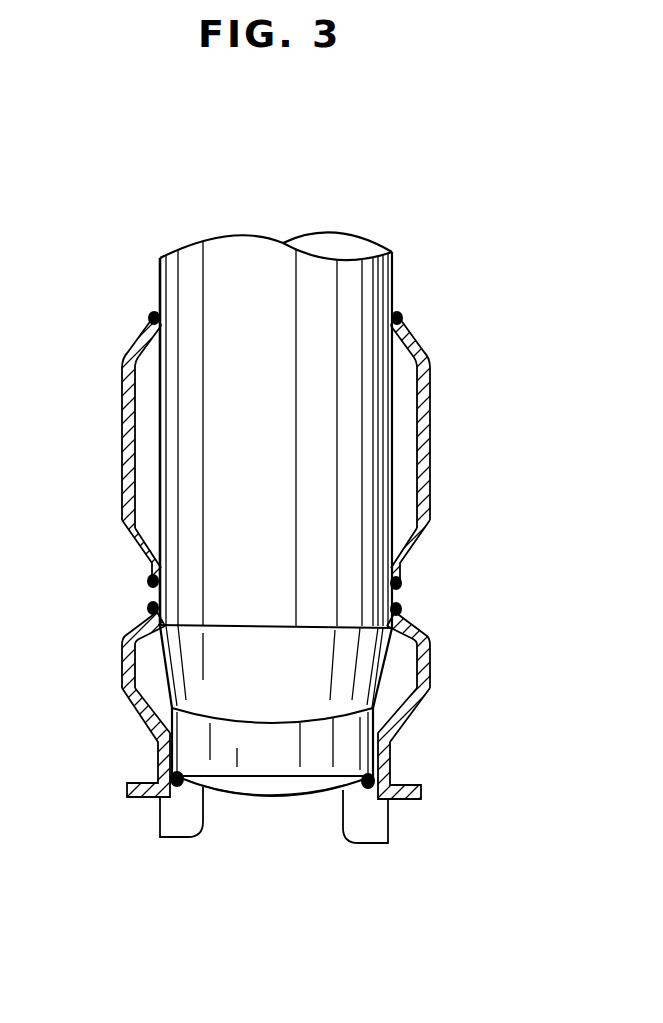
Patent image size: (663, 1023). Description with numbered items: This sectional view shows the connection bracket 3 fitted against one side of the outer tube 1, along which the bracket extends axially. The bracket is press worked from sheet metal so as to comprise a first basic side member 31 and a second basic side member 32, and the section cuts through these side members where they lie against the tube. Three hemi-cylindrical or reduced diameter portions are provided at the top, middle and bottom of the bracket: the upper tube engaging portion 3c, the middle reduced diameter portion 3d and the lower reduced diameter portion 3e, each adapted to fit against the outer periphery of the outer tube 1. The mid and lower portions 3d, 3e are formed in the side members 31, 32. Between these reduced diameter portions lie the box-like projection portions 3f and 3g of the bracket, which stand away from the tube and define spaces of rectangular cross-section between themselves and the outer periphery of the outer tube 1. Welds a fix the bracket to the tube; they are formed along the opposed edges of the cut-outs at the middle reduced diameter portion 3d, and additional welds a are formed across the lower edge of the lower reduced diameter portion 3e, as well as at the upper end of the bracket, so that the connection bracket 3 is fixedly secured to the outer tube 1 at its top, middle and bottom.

The outer tube 1 is at (376, 280).
The connection bracket 3 is at (436, 355).
The first basic side member 31 is at (116, 359).
The second basic side member 32 is at (438, 426).
The upper tube engaging portion 3c is at (146, 326).
The middle reduced diameter portion 3d is at (142, 596).
The lower reduced diameter portion 3e is at (157, 767).
The box-like projection portion 3f is at (124, 465).
The box-like projection portion 3g is at (121, 672).
The weld a is at (152, 314).